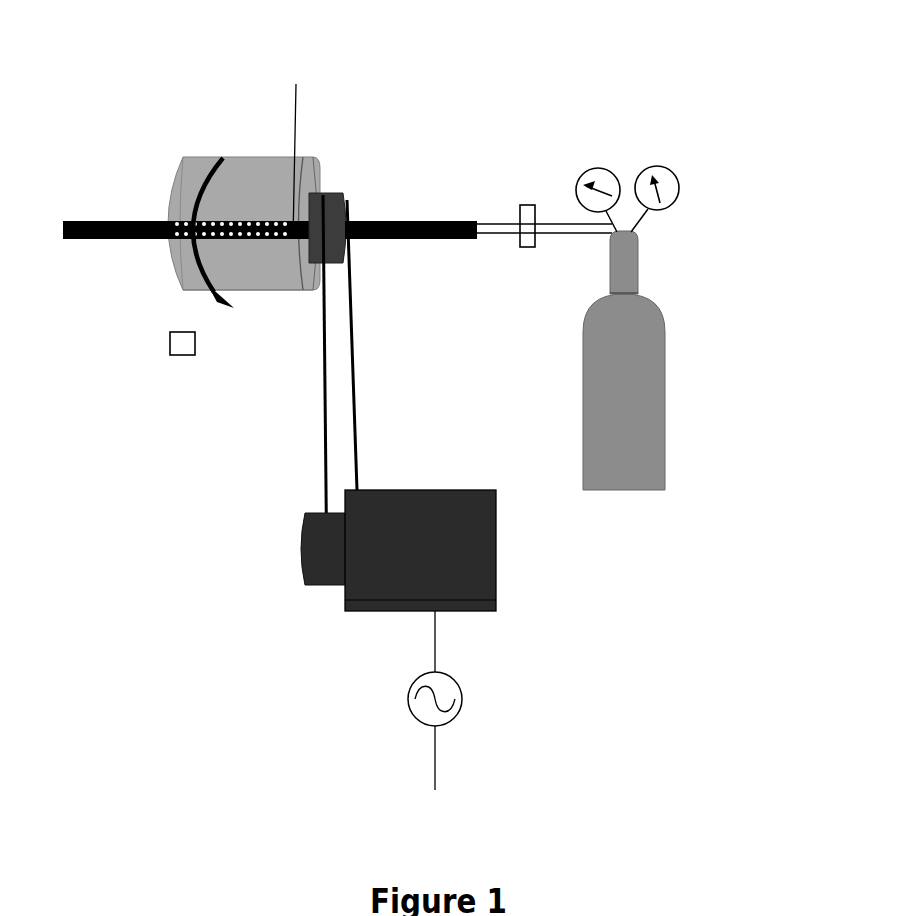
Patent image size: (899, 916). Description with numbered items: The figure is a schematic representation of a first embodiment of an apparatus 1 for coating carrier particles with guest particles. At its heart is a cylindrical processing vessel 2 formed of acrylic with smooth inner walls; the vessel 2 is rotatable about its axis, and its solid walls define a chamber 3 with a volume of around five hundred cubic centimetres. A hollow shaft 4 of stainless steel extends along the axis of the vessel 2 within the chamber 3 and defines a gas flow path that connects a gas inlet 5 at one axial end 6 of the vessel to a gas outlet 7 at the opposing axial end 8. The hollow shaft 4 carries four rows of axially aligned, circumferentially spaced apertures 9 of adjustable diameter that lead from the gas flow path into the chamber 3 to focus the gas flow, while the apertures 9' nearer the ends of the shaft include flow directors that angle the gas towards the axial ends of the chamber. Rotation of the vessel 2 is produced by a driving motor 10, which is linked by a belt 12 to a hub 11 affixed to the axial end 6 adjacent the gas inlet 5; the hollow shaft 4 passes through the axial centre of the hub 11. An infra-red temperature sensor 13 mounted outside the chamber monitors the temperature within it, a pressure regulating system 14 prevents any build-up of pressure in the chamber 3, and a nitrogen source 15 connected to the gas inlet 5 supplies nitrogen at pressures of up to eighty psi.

The apparatus 1 is at (724, 133).
The cylindrical processing vessel 2 is at (239, 157).
The chamber 3 is at (265, 273).
The hollow shaft 4 is at (298, 147).
The gas inlet 5 is at (407, 220).
The axial end 6 is at (317, 178).
The gas outlet 7 is at (120, 222).
The opposing axial end 8 is at (167, 172).
The apertures 9 is at (170, 270).
The apertures towards the axial ends 9' is at (298, 305).
The driving motor 10 is at (477, 552).
The hub 11 is at (347, 240).
The belt 12 is at (343, 380).
The infra-red temperature sensor 13 is at (182, 347).
The pressure regulating system 14 is at (528, 213).
The nitrogen source 15 is at (637, 362).